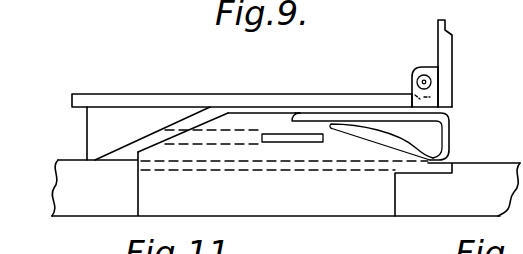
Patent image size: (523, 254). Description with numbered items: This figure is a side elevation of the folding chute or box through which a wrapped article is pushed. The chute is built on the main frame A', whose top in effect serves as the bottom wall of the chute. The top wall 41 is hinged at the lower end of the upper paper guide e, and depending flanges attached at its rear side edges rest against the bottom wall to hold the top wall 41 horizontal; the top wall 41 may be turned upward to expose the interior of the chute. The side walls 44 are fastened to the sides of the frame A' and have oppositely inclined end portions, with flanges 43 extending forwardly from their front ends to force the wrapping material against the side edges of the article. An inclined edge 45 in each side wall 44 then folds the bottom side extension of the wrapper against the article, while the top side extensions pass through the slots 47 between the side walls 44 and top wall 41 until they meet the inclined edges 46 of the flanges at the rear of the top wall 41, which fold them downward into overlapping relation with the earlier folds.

The top wall 41 is at (188, 95).
The flanges 43 is at (447, 133).
The side walls 44 is at (257, 112).
The inclined edge 45 is at (377, 145).
The inclined edges 46 is at (158, 126).
The slots 47 is at (335, 110).
The paper guides e is at (443, 47).
The frame A' is at (286, 184).